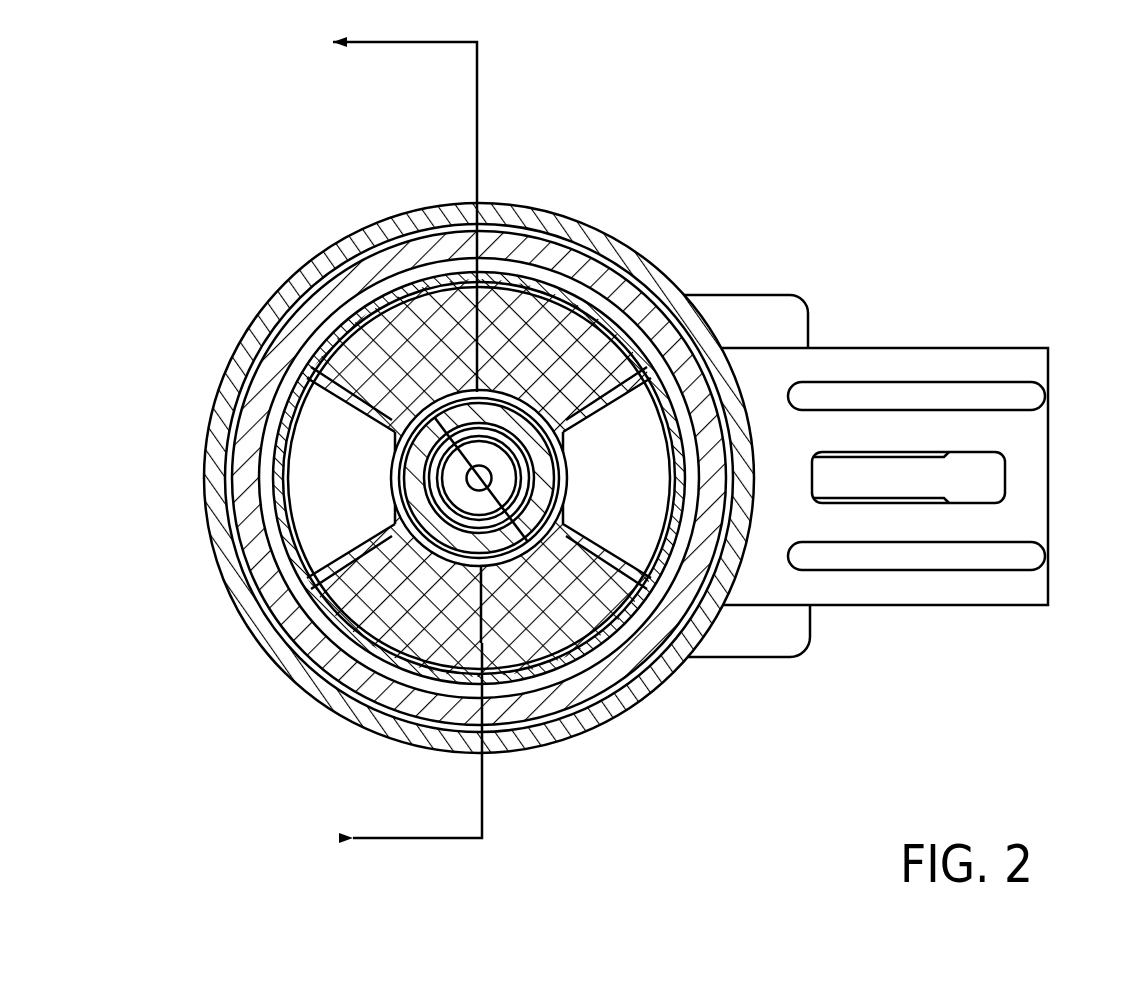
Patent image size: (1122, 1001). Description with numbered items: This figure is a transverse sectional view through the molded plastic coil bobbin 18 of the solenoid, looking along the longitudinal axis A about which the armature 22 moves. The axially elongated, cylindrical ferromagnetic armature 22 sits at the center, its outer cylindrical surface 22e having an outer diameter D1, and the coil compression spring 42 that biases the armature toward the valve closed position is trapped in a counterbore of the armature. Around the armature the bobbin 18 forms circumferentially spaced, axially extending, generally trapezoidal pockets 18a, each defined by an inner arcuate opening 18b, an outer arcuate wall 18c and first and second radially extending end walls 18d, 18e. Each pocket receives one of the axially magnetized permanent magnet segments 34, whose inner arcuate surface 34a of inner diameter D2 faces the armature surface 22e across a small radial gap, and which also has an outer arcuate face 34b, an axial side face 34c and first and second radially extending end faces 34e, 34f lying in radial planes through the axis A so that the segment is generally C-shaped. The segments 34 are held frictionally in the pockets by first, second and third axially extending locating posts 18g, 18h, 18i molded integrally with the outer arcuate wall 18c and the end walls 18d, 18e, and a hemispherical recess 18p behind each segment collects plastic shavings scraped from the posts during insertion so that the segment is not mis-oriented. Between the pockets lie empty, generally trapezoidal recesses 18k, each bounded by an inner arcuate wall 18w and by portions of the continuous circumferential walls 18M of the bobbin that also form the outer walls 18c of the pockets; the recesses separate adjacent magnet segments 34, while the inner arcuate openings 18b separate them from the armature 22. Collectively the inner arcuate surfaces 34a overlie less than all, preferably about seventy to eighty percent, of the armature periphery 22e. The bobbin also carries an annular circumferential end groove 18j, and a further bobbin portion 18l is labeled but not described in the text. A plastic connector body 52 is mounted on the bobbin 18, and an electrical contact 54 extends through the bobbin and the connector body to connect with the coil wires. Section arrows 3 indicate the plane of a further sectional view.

The section line 3- 3 is at (392, 440).
The coil bobbin 18 is at (243, 533).
The pockets 18a is at (610, 335).
The inner arcuate opening 18b is at (625, 290).
The outer arcuate wall 18c is at (395, 240).
The first radially extending end wall 18d is at (287, 430).
The second radially extending end wall 18e is at (700, 390).
The first axially extending locating post 18g is at (486, 265).
The second axially extending locating post 18h is at (345, 640).
The third axially extending locating post 18i is at (605, 670).
The annular circumferential end groove 18j is at (290, 595).
The empty recesses 18k is at (351, 498).
The roller body portion 18l is at (670, 533).
The continuous circumferential walls 18M is at (537, 687).
The hemispherical recess 18p is at (520, 345).
The inner arcuate wall 18w is at (597, 438).
The armature 22 is at (560, 510).
The outer cylindrical surface of the armature 22e is at (207, 498).
The permanent magnet segments 34 is at (660, 297).
The inner arcuate magnet surface 34a is at (262, 760).
The outer arcuate face 34b is at (593, 314).
The first axial side face 34c is at (448, 300).
The first radially extending end face 34e is at (308, 366).
The second radially extending end face 34f is at (660, 390).
The coil compression spring 42 is at (361, 258).
The plastic connector body 52 is at (975, 350).
The electrical contacts 54 is at (990, 478).
The longitudinal axis A is at (479, 478).
The outer diameter of the armature surface D1 is at (280, 296).
The inner diameter of the inner arcuate magnet segment surface D2 is at (326, 262).